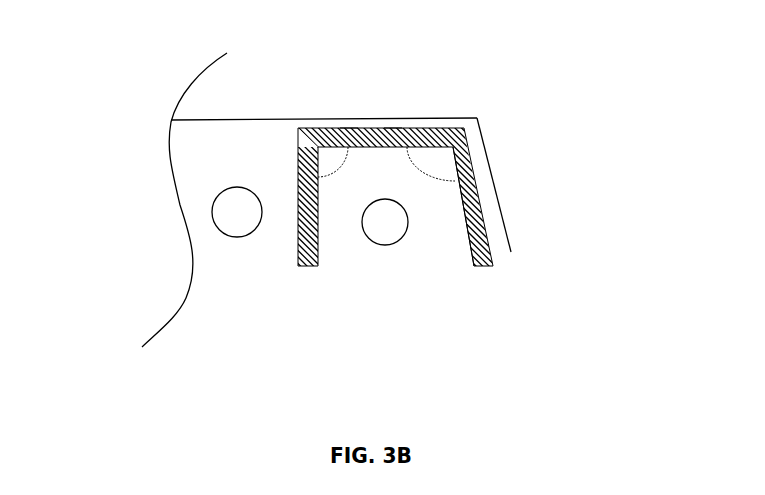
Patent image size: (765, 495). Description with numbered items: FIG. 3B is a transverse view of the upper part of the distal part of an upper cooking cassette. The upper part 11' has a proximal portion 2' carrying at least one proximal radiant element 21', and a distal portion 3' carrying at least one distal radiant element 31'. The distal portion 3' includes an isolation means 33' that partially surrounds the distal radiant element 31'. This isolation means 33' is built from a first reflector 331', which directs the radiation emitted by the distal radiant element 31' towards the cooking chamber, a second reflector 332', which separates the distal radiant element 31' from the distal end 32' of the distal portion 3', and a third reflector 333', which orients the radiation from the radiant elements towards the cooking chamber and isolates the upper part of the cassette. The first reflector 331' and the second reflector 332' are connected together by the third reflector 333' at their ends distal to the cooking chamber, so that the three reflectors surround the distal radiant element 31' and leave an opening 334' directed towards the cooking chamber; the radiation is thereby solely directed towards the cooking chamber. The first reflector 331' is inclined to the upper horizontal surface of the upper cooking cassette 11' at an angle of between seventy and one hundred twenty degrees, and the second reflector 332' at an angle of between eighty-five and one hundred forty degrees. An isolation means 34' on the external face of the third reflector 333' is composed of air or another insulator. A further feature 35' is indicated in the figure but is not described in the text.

The proximal portion 2' is at (163, 190).
The upper part 11' is at (324, 62).
The proximal radiant element 21' is at (169, 212).
The distal portion 3' is at (395, 197).
The distal radiant element 31' is at (385, 294).
The distal end 32' is at (571, 131).
The isolation means 33' is at (454, 200).
The first reflector 331' is at (303, 228).
The second reflector 332' is at (473, 200).
The third reflector 333' is at (409, 74).
The opening 334' is at (479, 266).
The isolation means of the external faces 34' is at (360, 83).
The side wall 35' is at (560, 185).